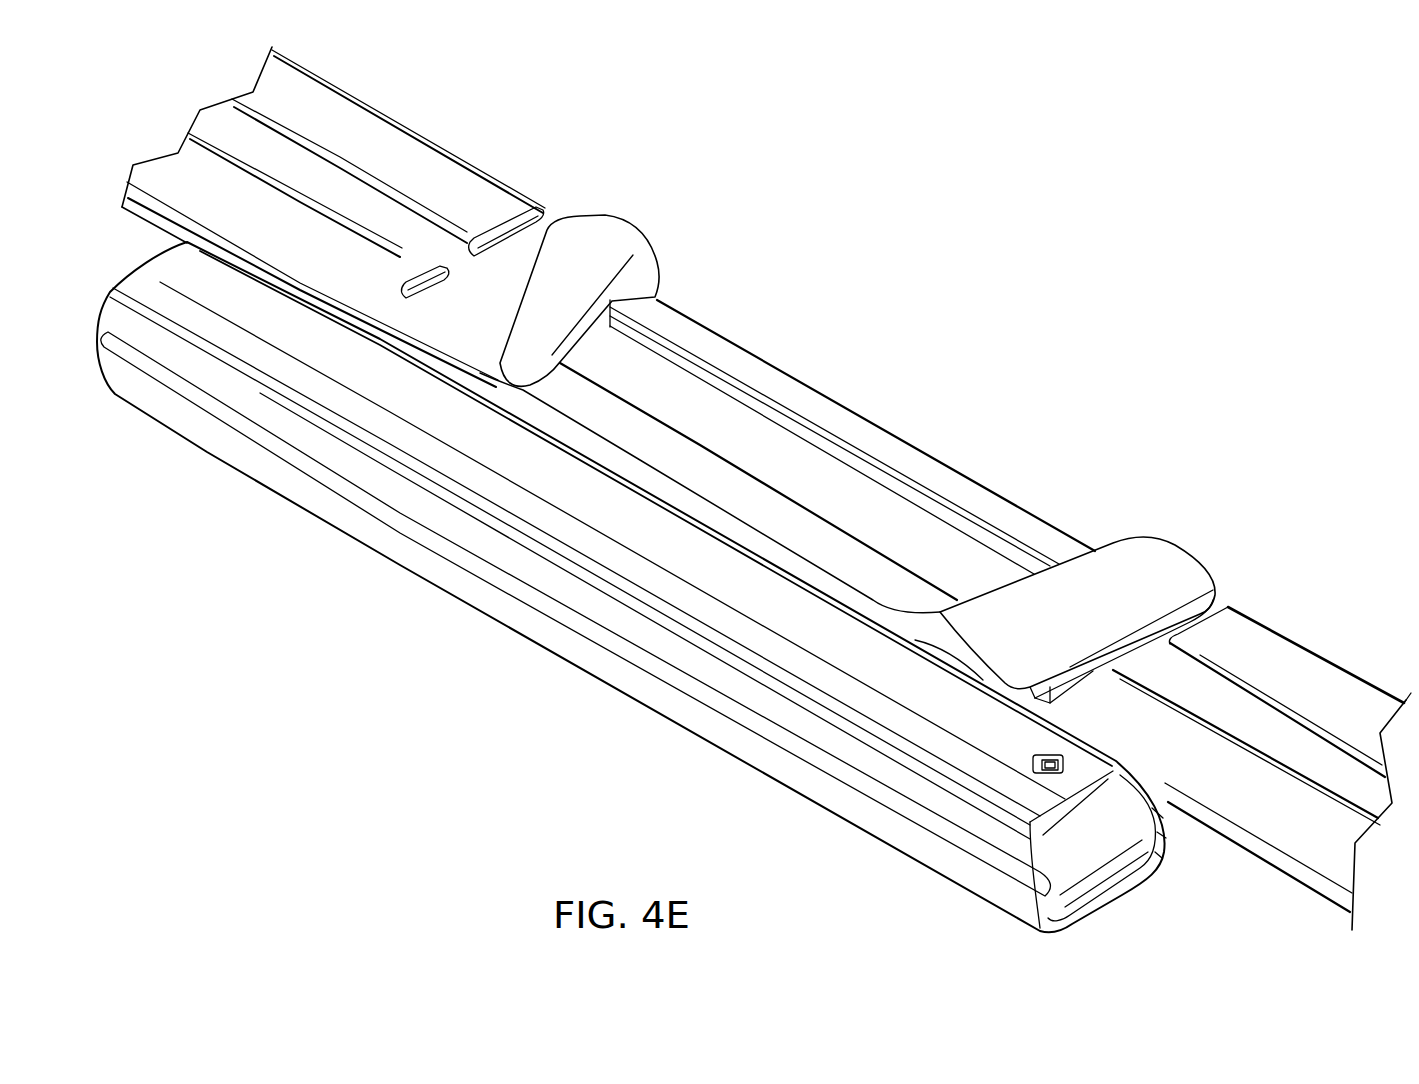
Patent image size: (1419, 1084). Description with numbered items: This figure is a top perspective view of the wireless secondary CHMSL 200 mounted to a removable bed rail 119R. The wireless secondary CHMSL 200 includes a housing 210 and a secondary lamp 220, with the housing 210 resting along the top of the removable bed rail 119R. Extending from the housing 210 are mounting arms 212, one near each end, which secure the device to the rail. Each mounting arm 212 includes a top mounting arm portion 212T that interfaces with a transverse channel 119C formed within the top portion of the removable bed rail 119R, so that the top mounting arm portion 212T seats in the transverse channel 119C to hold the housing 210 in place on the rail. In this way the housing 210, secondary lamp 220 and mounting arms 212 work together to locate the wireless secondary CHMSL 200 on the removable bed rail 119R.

The wireless secondary CHMSL 200 is at (529, 712).
The housing 210 is at (640, 521).
The mounting arm 212 is at (613, 240).
The top mounting arm portion 212T is at (560, 301).
The secondary lamp 220 is at (982, 857).
The transverse channel 119C is at (740, 433).
The removable bed rail 119R is at (962, 390).